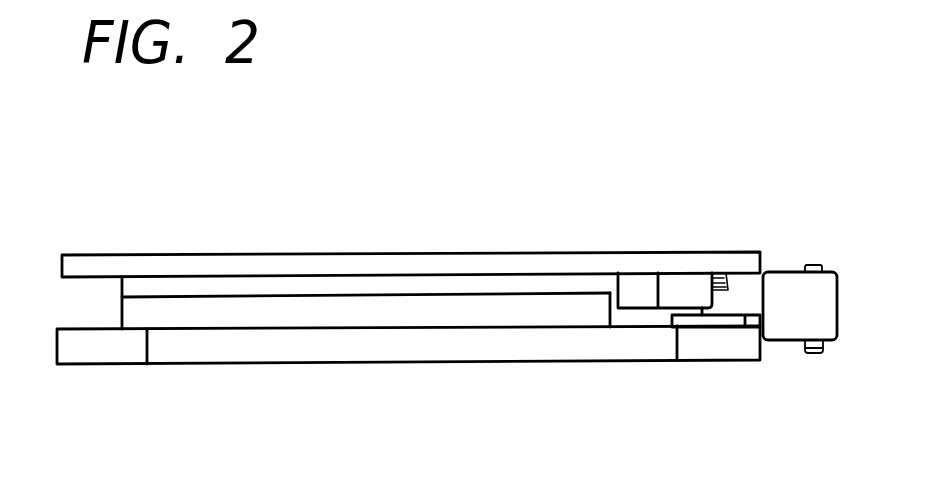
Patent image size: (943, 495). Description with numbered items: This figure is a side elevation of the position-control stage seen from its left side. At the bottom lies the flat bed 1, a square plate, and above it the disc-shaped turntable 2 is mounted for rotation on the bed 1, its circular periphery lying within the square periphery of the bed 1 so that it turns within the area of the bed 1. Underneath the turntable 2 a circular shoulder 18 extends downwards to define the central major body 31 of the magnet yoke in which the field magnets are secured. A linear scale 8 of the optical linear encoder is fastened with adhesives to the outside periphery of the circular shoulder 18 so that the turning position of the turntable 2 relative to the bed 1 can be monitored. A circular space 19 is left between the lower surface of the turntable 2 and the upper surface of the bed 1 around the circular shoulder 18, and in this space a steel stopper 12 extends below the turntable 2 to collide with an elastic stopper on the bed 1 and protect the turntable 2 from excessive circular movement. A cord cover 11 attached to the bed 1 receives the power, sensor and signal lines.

The bed 1 is at (300, 340).
The turntable 2 is at (356, 267).
The linear scale 8 is at (463, 313).
The cord cover 11 is at (792, 290).
The stopper 12 is at (683, 287).
The circular shoulder 18 is at (118, 293).
The circular space 19 is at (98, 302).
The central major body 31 is at (267, 285).